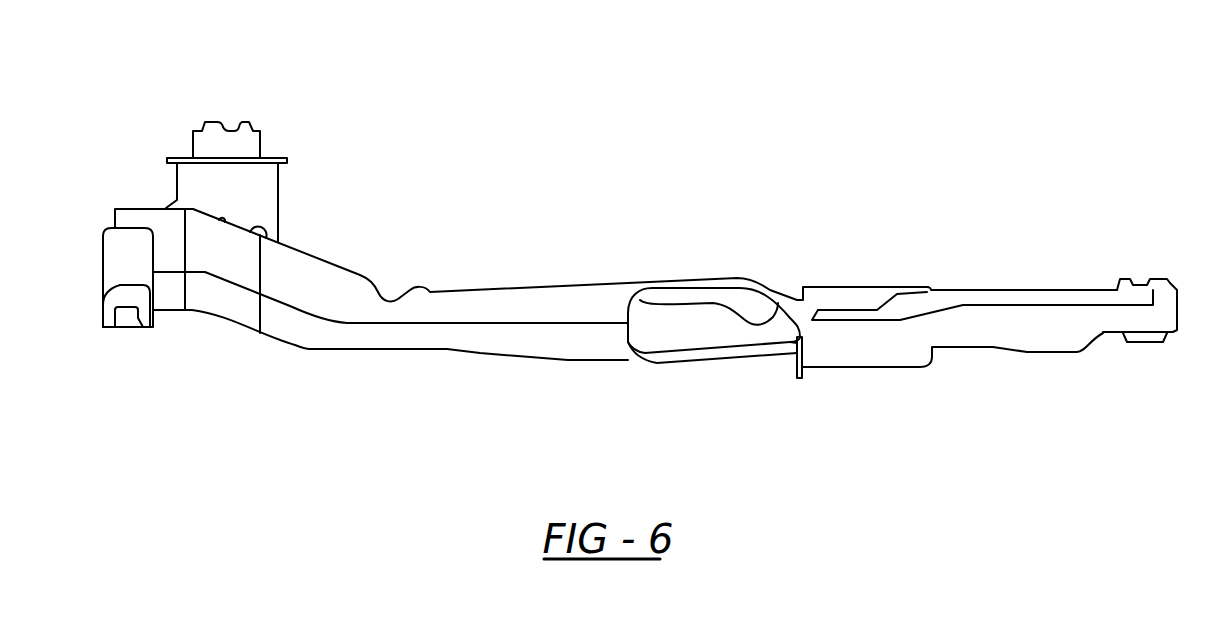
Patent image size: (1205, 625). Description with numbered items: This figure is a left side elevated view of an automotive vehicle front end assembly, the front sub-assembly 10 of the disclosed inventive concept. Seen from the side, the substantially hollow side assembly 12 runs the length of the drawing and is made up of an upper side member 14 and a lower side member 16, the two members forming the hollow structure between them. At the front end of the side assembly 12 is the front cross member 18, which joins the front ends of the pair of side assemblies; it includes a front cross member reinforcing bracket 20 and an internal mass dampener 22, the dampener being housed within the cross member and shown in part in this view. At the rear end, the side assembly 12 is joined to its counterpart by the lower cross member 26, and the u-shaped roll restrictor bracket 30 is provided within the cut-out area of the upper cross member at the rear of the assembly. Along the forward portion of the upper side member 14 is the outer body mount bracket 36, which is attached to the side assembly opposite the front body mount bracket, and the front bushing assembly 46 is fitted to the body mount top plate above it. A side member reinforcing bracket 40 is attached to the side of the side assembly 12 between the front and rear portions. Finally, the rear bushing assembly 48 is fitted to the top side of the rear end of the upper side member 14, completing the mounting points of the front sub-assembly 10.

The front sub-assembly 10 is at (992, 182).
The substantially hollow side assembly 12 is at (465, 300).
The upper side member 14 is at (560, 293).
The lower side member 16 is at (532, 345).
The front cross member 18 is at (118, 253).
The front cross member reinforcing bracket 20 is at (128, 330).
The internal mass dampener 22 is at (123, 277).
The lower cross member 26 is at (843, 367).
The u-shaped roll restrictor bracket 30 is at (847, 290).
The outer body mount bracket 36 is at (267, 215).
The side member reinforcing bracket 40 is at (700, 335).
The front bushing assembly 46 is at (238, 130).
The rear bushing assembly 48 is at (1147, 288).